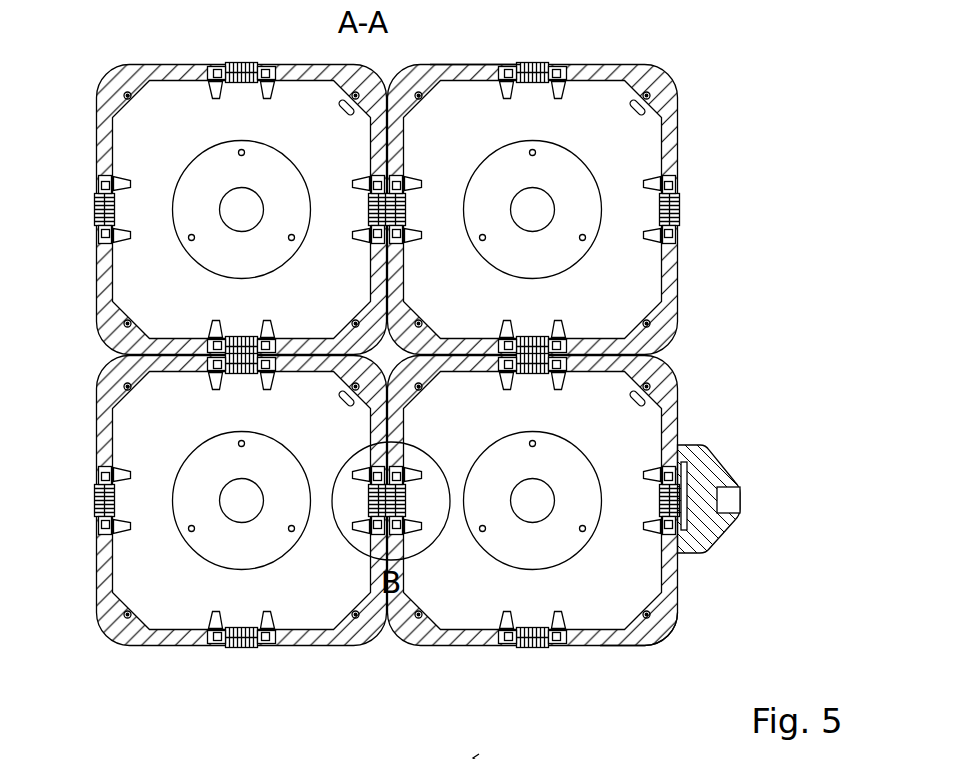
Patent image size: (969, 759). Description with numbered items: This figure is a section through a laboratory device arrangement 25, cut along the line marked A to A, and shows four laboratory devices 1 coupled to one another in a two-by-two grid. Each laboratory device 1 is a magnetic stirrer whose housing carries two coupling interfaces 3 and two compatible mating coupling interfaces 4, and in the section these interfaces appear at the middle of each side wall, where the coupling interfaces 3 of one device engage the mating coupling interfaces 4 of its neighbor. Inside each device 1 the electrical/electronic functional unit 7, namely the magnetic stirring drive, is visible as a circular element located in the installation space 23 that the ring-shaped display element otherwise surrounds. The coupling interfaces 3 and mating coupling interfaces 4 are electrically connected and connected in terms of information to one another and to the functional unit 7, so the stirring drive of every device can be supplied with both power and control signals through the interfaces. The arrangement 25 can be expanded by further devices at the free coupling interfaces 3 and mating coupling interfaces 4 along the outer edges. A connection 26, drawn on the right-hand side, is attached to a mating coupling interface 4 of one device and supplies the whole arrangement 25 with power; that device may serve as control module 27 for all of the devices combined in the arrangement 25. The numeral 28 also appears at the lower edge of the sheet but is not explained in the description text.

The laboratory device 1 is at (163, 51).
The coupling interface 3 is at (95, 215).
The mating coupling interface 4 is at (254, 85).
The electrical/electronic functional unit 7 is at (207, 169).
The installation space 23 is at (655, 166).
The laboratory device arrangement 25 is at (498, 46).
The connection 26 is at (703, 477).
The control module 27 is at (630, 634).
The support 28 is at (486, 756).